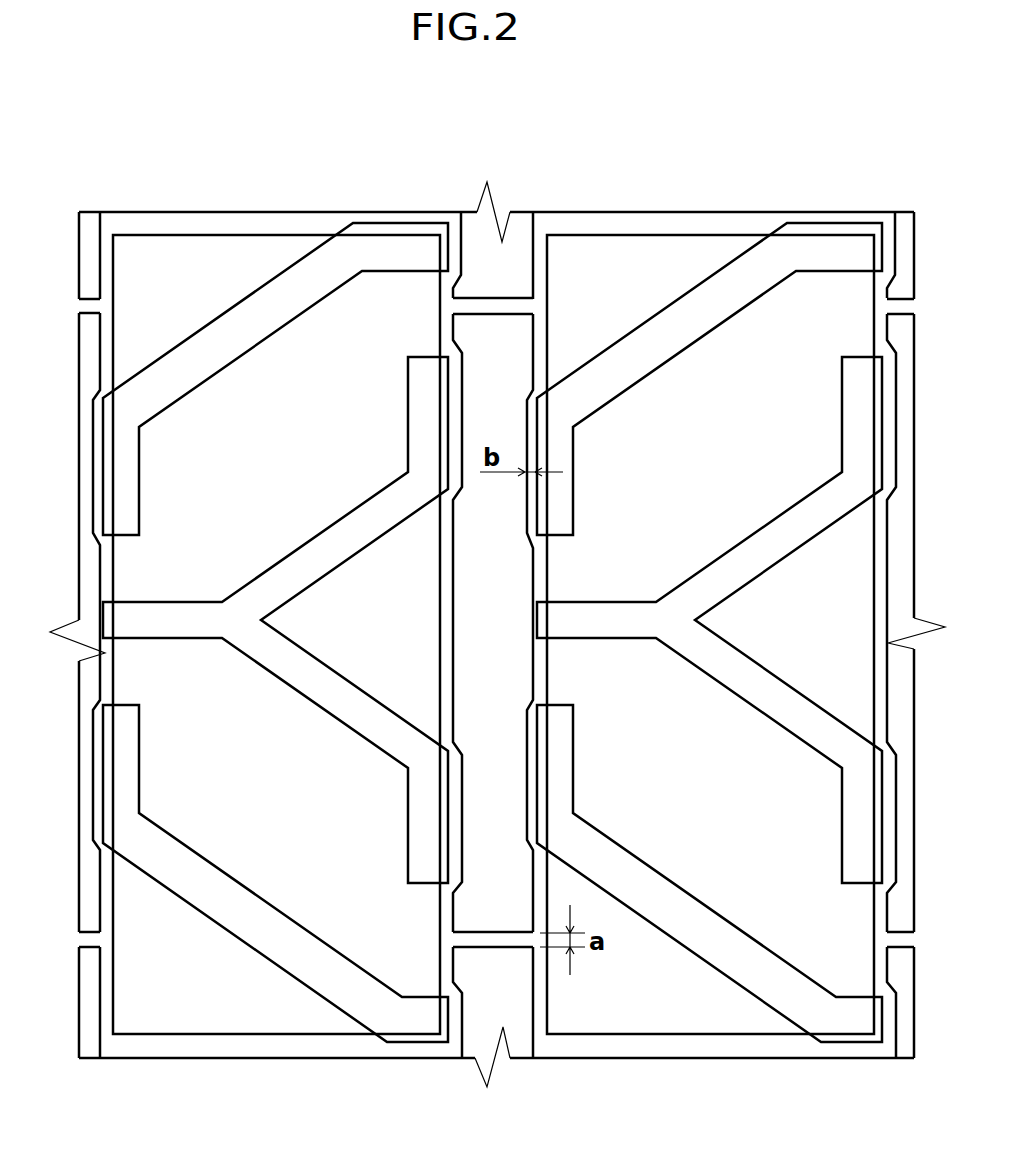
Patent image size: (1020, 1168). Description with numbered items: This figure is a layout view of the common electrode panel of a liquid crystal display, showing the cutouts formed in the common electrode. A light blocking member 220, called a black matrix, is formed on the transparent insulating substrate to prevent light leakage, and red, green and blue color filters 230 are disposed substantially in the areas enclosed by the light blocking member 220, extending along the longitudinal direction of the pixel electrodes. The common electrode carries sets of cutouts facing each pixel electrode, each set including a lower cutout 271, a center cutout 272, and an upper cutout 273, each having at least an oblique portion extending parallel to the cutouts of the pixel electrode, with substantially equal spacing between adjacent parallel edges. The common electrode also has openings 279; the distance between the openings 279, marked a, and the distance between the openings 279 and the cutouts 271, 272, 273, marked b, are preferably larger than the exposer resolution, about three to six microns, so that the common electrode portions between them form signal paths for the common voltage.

The light blocking member 220 is at (429, 948).
The color filters 230 is at (237, 1048).
The lower cutout 271 is at (275, 892).
The center cutout 272 is at (289, 701).
The upper cutout 273 is at (253, 364).
The openings 279 is at (548, 323).